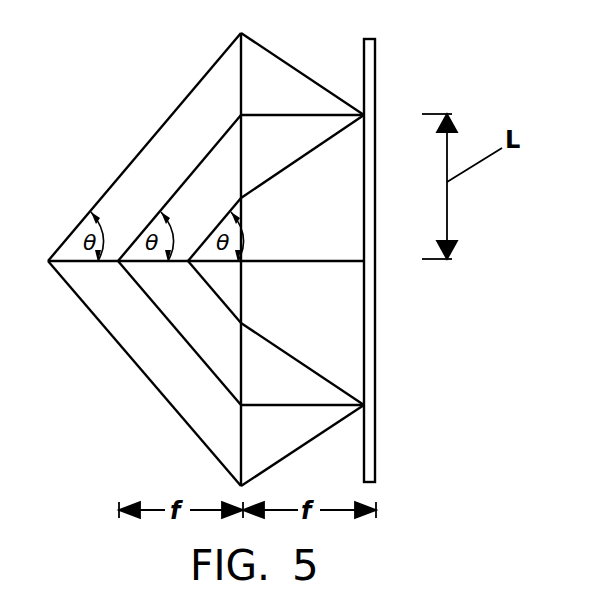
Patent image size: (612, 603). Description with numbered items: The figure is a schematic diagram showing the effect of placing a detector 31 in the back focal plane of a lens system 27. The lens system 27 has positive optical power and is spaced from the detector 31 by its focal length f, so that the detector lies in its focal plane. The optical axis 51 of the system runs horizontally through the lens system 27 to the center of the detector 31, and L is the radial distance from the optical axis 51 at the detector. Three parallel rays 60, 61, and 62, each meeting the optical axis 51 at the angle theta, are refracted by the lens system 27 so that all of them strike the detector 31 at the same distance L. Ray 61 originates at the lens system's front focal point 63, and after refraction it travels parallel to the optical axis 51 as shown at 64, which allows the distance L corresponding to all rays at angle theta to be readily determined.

The lens system 27 is at (241, 62).
The detector 31 is at (370, 70).
The optical axis 51 is at (280, 262).
The ray 60 is at (145, 146).
The ray 61 is at (175, 188).
The ray 62 is at (205, 241).
The front focal point 63 is at (118, 262).
The refracted ray path 64 is at (310, 113).